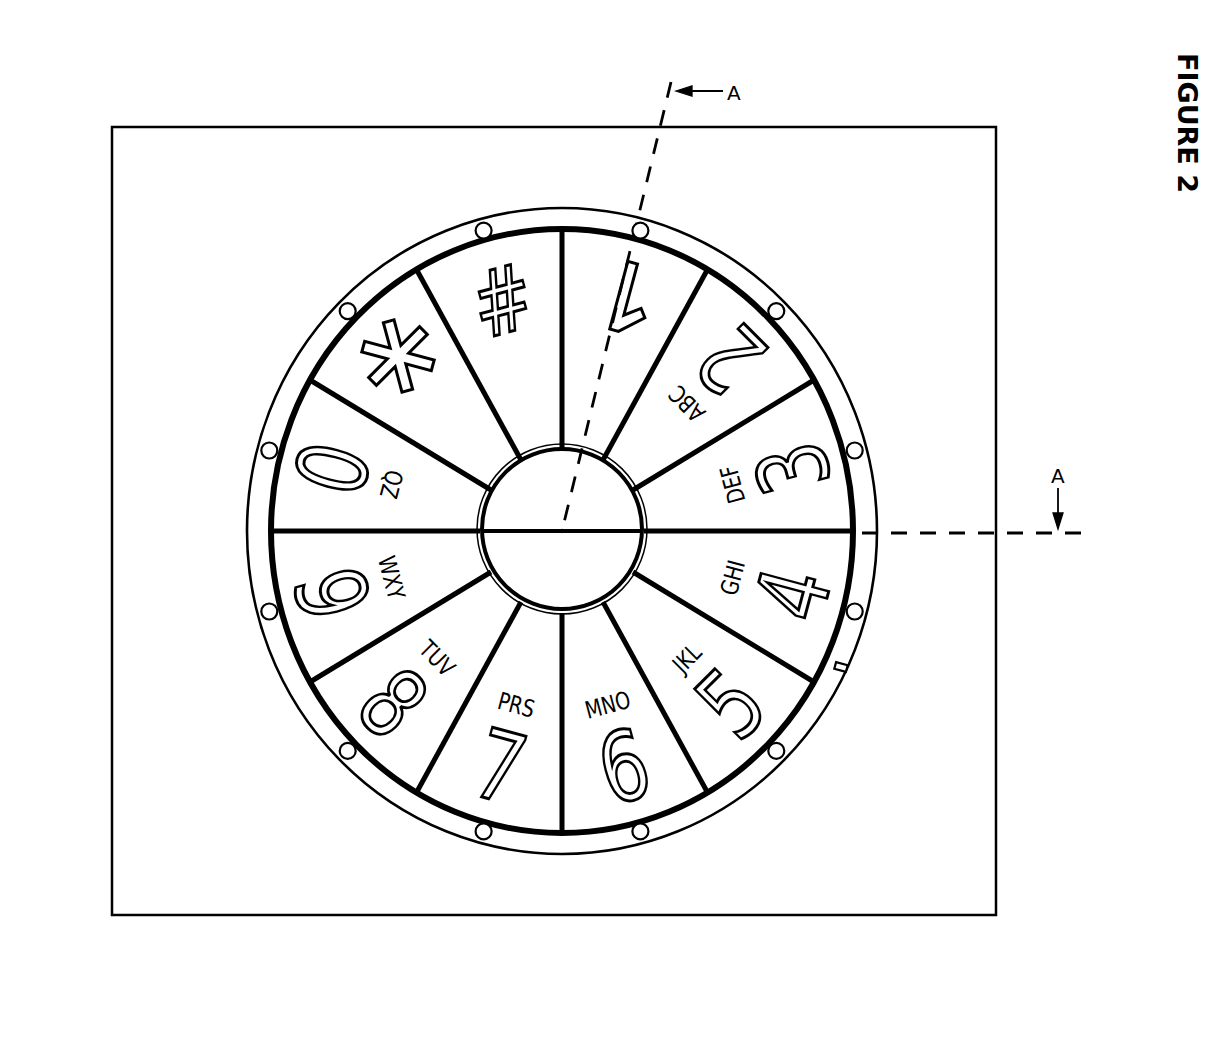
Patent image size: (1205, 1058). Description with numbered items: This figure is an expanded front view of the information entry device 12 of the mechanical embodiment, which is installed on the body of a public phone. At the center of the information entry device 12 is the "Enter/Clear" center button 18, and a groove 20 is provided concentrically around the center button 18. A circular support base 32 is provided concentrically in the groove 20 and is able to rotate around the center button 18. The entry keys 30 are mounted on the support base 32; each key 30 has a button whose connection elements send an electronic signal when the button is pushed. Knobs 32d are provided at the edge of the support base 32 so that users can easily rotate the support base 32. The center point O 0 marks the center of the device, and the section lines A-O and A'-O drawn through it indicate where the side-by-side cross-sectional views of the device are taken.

The information entry device 12 is at (876, 597).
The center button 18 is at (600, 601).
The groove 20 is at (847, 668).
The entry key 30 is at (788, 372).
The circular support base 32 is at (692, 248).
The knob 32d is at (856, 450).
The center point O 0 is at (553, 531).